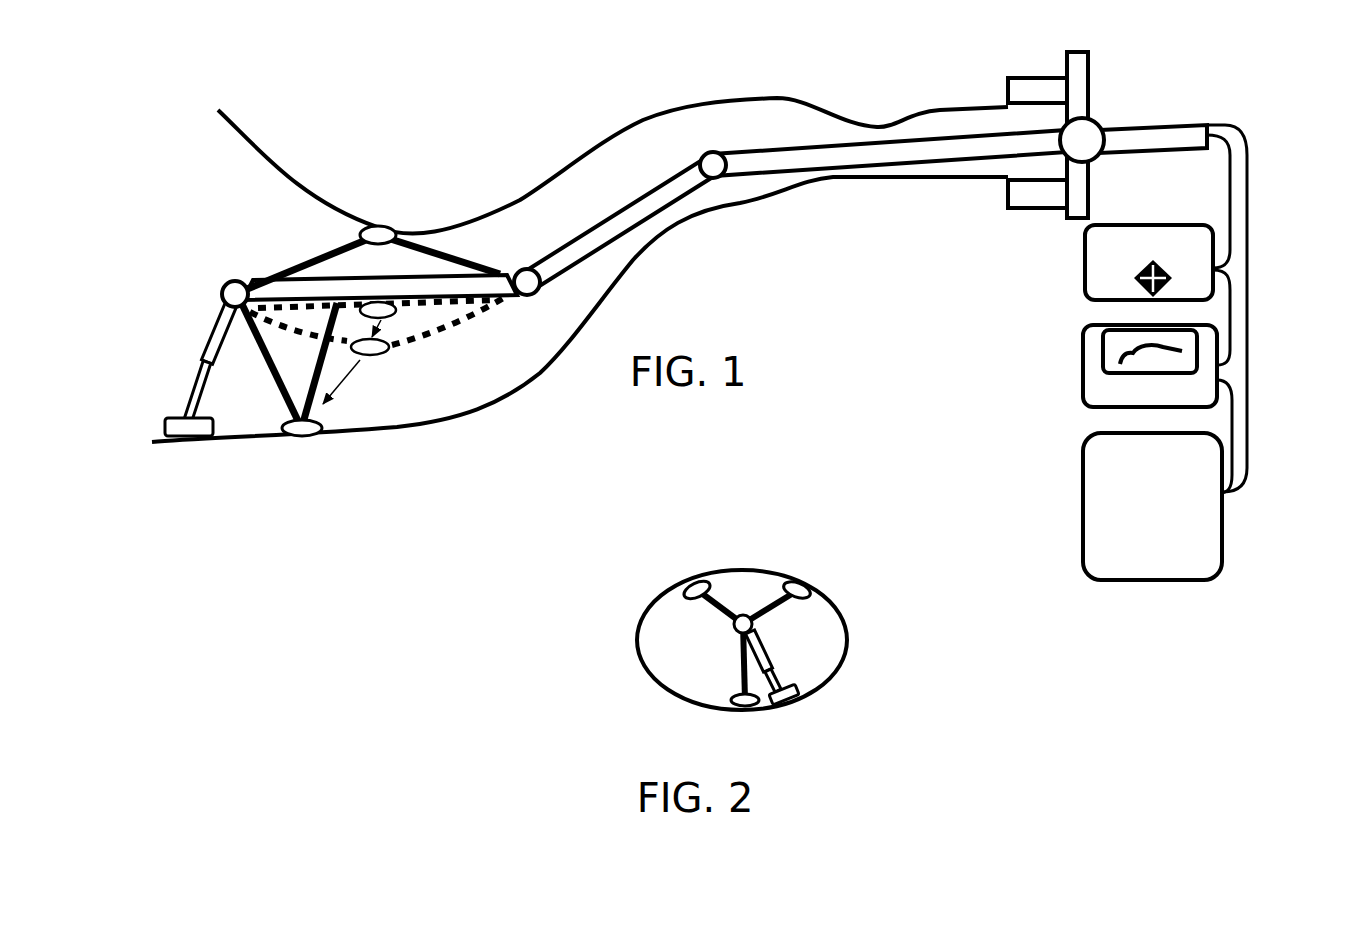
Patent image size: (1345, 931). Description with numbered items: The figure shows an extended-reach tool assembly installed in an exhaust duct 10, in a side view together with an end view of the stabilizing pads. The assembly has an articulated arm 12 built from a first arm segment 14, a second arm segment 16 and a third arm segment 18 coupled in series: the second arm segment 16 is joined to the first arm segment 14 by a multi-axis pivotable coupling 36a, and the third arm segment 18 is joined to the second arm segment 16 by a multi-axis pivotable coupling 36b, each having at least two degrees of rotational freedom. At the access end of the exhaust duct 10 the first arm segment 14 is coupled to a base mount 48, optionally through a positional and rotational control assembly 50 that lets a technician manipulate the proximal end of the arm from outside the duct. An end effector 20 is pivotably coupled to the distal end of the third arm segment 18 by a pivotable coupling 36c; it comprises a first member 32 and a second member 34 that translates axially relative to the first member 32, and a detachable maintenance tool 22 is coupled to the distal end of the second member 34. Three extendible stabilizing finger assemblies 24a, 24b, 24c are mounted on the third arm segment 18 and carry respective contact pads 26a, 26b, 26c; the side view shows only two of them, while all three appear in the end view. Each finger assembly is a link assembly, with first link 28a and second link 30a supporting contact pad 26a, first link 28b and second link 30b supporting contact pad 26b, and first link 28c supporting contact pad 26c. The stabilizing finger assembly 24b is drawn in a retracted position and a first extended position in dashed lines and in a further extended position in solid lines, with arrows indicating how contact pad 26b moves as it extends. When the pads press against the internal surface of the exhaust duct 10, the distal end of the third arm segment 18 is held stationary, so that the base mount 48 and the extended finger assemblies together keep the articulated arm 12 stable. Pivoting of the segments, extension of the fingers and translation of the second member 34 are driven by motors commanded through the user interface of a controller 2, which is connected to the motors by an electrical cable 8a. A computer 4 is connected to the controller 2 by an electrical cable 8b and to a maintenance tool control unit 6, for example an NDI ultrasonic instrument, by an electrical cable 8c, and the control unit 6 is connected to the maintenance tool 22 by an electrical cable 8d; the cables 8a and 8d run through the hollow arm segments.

In FIG. 1, the controller 2 is at (1085, 252).
In FIG. 1, the computer 4 is at (1083, 362).
In FIG. 1, the maintenance tool control unit 6 is at (1083, 495).
In FIG. 1, the electrical cable 8a is at (1226, 163).
In FIG. 1, the electrical cable 8b is at (1233, 288).
In FIG. 1, the electrical cable 8c is at (1236, 396).
In FIG. 1, the electrical cable 8d is at (1249, 193).
In FIG. 1, the exhaust duct 10 is at (648, 108).
In FIG. 2, the exhaust duct 10 is at (637, 643).
In FIG. 1, the articulated arm 12 is at (640, 228).
In FIG. 1, the first arm segment 14 is at (1142, 128).
In FIG. 1, the second arm segment 16 is at (656, 190).
In FIG. 1, the third arm segment 18 is at (472, 288).
In FIG. 1, the end effector 20 is at (185, 370).
In FIG. 2, the end effector 20 is at (830, 694).
In FIG. 1, the maintenance tool 22 is at (190, 434).
In FIG. 2, the maintenance tool 22 is at (788, 708).
In FIG. 1, the stabilizing finger assembly 24a is at (389, 196).
In FIG. 2, the stabilizing finger assembly 24a is at (845, 563).
In FIG. 1, the stabilizing finger assembly 24b is at (303, 468).
In FIG. 2, the stabilizing finger assembly 24b is at (693, 728).
In FIG. 2, the stabilizing finger assembly 24c is at (644, 566).
In FIG. 1, the contact pad 26a is at (387, 237).
In FIG. 2, the contact pad 26a is at (812, 596).
In FIG. 1, the contact pad 26b is at (306, 433).
In FIG. 2, the contact pad 26b is at (712, 710).
In FIG. 2, the contact pad 26c is at (682, 593).
In FIG. 1, the first link 28a is at (314, 253).
In FIG. 2, the first link 28a is at (783, 607).
In FIG. 1, the first link 28b is at (254, 352).
In FIG. 2, the first link 28b is at (740, 672).
In FIG. 2, the first link 28c is at (722, 605).
In FIG. 1, the second link 30a is at (458, 258).
In FIG. 1, the second link 30b is at (315, 373).
In FIG. 1, the first member 32 is at (198, 344).
In FIG. 1, the second member 34 is at (183, 397).
In FIG. 1, the multi-axis pivotable coupling 36a is at (716, 155).
In FIG. 1, the multi-axis pivotable coupling 36b is at (530, 294).
In FIG. 1, the pivotable coupling 36c is at (236, 289).
In FIG. 2, the pivotable coupling 36c is at (745, 614).
In FIG. 1, the base mount 48 is at (1055, 71).
In FIG. 1, the positional and rotational control assembly 50 is at (1058, 146).